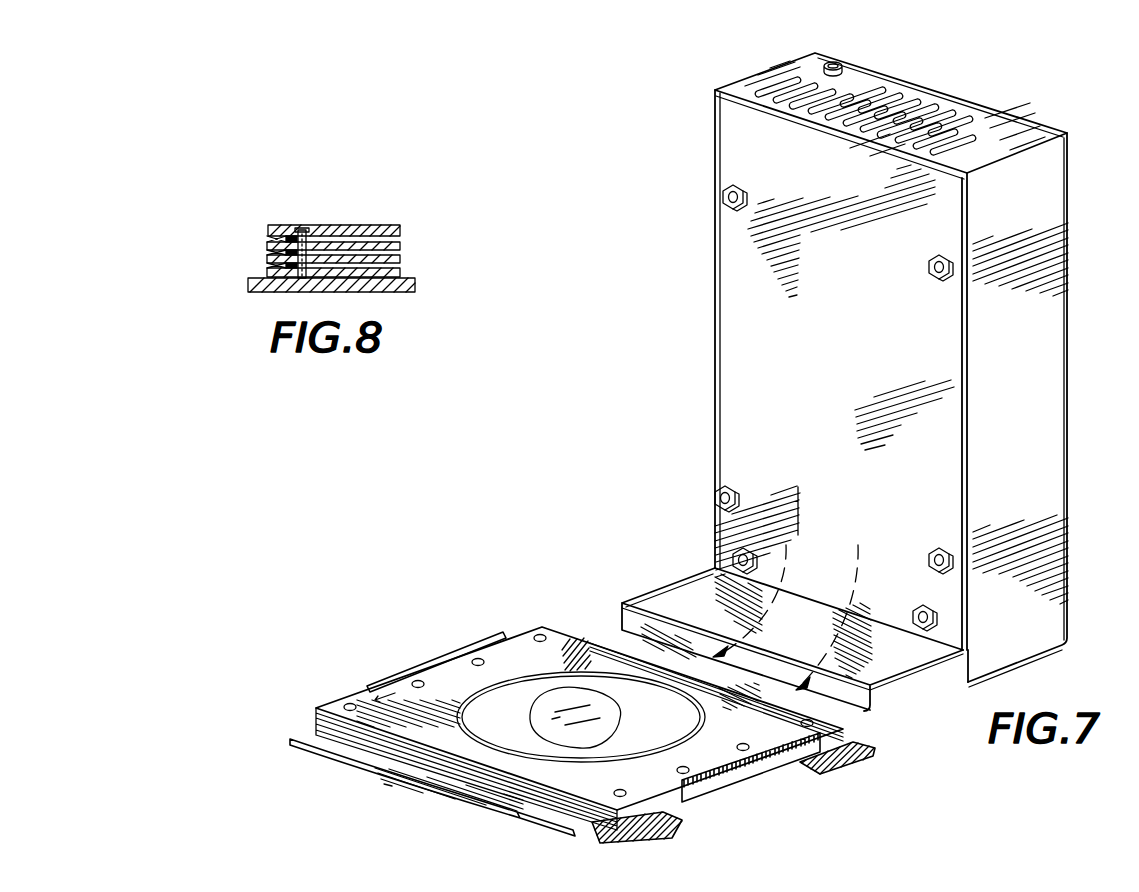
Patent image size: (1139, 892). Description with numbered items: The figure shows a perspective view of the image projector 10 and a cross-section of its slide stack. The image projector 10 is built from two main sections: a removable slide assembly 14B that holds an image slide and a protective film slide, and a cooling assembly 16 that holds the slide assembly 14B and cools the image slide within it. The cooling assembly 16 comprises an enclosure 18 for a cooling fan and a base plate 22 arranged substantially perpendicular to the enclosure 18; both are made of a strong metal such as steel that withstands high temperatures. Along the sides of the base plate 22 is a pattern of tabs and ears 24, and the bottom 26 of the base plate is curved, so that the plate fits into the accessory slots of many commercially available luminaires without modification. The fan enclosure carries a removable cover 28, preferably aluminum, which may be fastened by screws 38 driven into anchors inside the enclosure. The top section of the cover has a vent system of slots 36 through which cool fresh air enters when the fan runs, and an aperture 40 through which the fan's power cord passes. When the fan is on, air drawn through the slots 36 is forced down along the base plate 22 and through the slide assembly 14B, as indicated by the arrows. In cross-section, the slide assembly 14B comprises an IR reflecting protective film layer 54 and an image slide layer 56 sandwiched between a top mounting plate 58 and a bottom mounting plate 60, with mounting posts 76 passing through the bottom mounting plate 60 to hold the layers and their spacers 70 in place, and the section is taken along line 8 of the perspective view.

In FIG. 7, the image projector 10 is at (705, 421).
In FIG. 7, the slide assembly 14B is at (550, 658).
In FIG. 7, the cooling assembly 16 is at (952, 622).
In FIG. 7, the enclosure 18 is at (1045, 336).
In FIG. 7, the base plate 22 is at (850, 700).
In FIG. 8, the base plate 22 is at (252, 290).
In FIG. 7, the tabs and ears 24 is at (668, 835).
In FIG. 7, the curved bottom of the base plate 26 is at (408, 793).
In FIG. 7, the removable cover 28 is at (743, 282).
In FIG. 7, the slots 36 is at (972, 137).
In FIG. 7, the screws 38 is at (940, 548).
In FIG. 7, the aperture 40 is at (840, 64).
In FIG. 8, the IR reflecting protective film layer 54 is at (400, 259).
In FIG. 8, the image slide layer 56 is at (400, 246).
In FIG. 8, the top mounting plate 58 is at (352, 225).
In FIG. 8, the bottom mounting plate 60 is at (400, 273).
In FIG. 8, the spacer 70 is at (268, 240).
In FIG. 8, the mounting posts 76 is at (300, 228).
In FIG. 7, the tab 8 is at (382, 728).